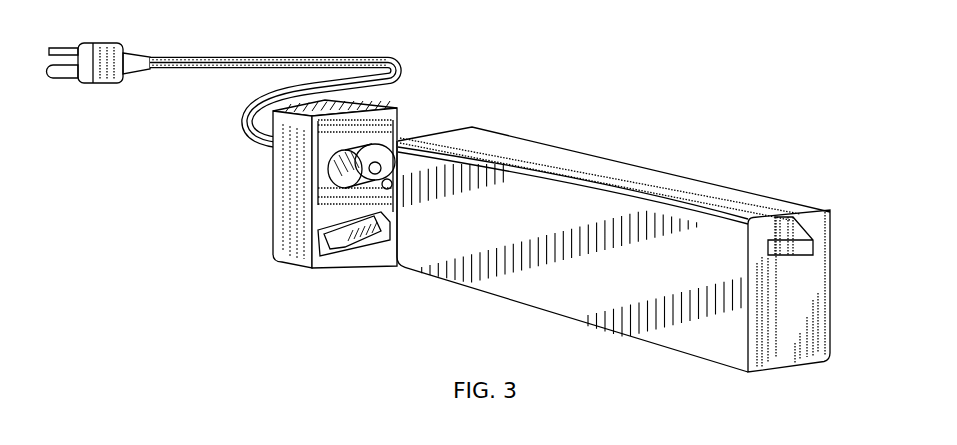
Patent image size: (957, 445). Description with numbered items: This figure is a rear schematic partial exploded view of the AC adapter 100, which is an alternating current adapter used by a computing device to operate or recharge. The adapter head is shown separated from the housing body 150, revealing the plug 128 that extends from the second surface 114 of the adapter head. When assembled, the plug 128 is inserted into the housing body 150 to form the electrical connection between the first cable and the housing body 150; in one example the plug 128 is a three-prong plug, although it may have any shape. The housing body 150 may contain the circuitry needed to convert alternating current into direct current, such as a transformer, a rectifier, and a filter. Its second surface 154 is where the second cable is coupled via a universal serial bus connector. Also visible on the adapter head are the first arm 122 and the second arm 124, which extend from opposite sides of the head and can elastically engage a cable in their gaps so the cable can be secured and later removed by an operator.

The AC adapter 100 is at (674, 46).
The second surface 114 is at (325, 196).
The first arm 122 is at (383, 243).
The second arm 124 is at (333, 257).
The plug 128 is at (345, 153).
The housing body 150 is at (643, 249).
The second surface 154 is at (818, 323).